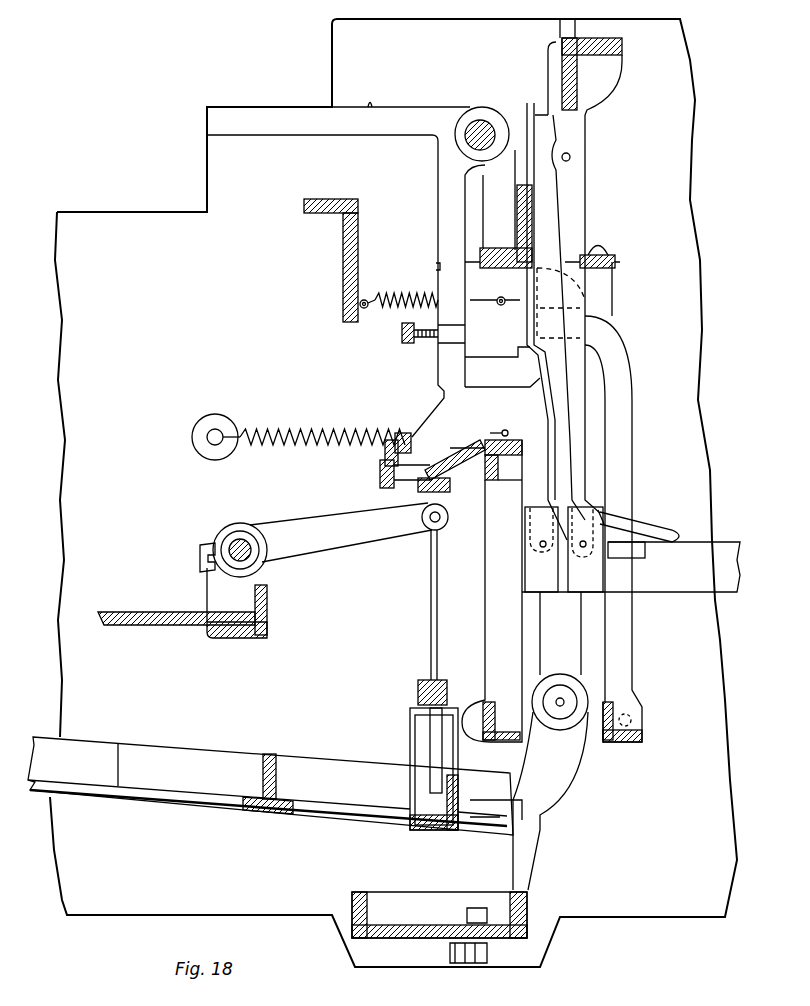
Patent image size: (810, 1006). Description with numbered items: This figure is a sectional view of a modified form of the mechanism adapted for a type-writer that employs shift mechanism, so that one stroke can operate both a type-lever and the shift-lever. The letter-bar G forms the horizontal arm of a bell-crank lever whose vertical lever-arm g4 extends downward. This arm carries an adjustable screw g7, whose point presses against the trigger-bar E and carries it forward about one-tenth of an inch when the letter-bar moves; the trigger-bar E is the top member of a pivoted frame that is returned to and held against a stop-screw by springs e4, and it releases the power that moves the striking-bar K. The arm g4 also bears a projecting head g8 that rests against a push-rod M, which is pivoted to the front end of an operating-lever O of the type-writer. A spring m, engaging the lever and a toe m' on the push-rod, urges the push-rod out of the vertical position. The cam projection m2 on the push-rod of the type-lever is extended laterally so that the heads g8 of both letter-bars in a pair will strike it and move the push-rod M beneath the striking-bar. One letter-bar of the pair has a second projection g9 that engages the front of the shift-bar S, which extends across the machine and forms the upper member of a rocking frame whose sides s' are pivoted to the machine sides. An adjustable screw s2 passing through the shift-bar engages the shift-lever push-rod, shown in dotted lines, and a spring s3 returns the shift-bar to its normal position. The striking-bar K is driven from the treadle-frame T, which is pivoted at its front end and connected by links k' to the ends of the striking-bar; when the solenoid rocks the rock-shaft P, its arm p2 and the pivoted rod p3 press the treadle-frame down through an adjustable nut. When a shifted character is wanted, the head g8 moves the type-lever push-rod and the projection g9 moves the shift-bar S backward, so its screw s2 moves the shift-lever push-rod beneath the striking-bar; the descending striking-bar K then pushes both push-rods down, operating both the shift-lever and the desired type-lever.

The letter-bar G is at (400, 112).
The vertical lever-arm g4 is at (440, 218).
The projecting head g8 is at (515, 382).
The second projection g9 is at (460, 333).
The adjustable screw g7 is at (430, 482).
The striking-bar K is at (625, 48).
The push-rod M is at (555, 222).
The cam projection m2 is at (530, 297).
The toe or projection m' is at (630, 506).
The spring m is at (639, 526).
The shift-bar S is at (505, 300).
The spring s3 is at (384, 292).
The adjustable screw s2 is at (402, 336).
The sides of rocking frame s' is at (633, 367).
The spring e4 is at (285, 433).
The trigger-bar E is at (492, 586).
The rock-shaft P is at (230, 545).
The arm p2 is at (338, 542).
The rod p3 is at (428, 598).
The operating-lever of the type-writer O is at (631, 549).
The link k' is at (550, 741).
The treadle-frame T is at (327, 770).